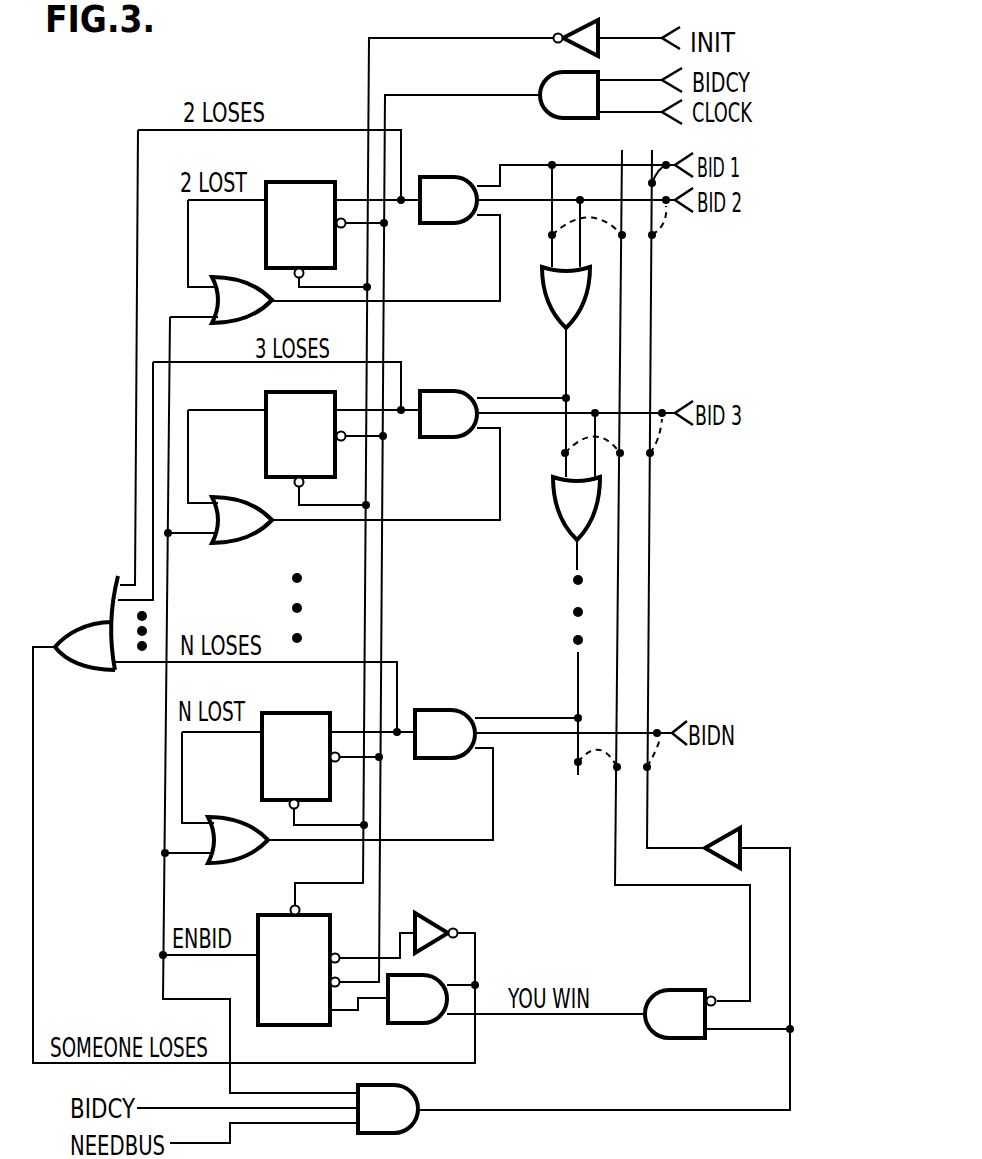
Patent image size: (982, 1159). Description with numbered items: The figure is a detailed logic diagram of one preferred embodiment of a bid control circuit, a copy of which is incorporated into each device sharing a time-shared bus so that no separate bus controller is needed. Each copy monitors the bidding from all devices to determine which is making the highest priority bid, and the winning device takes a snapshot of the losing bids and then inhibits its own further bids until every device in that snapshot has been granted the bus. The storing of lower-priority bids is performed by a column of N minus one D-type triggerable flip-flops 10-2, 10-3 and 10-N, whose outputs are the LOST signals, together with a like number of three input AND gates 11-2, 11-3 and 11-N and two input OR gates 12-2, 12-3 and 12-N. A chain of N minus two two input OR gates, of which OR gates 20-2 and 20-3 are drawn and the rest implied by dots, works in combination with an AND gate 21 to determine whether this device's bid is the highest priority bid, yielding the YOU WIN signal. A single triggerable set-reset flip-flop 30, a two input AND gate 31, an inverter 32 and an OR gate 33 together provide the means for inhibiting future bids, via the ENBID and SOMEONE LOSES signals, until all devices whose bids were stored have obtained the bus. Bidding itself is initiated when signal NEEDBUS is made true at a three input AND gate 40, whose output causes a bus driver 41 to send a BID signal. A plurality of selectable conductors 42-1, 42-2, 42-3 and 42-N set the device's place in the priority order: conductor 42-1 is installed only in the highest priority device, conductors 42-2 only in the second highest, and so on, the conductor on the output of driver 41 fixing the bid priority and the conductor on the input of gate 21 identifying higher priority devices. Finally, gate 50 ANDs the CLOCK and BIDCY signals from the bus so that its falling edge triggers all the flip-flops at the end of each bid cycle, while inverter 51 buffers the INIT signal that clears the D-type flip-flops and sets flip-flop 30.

The D-type triggerable flip-flop 10-2 is at (270, 181).
The D-type triggerable flip-flop 10-3 is at (266, 394).
The D-type triggerable flip-flop 10-N is at (322, 688).
The three input AND gate 11-2 is at (455, 177).
The three input AND gate 11-3 is at (450, 392).
The three input AND gate 11-N is at (455, 712).
The two input OR gate 12-2 is at (245, 282).
The two input OR gate 12-3 is at (250, 540).
The two input OR gate 12-N is at (240, 820).
The two input OR gate 20-2 is at (551, 308).
The two input OR gate 20-3 is at (560, 512).
The AND gate 21 is at (655, 1030).
The triggerable set-reset flip-flop 30 is at (258, 972).
The two input AND gate 31 is at (405, 1022).
The inverter 32 is at (437, 922).
The OR gate 33 is at (88, 672).
The three input AND gate 40 is at (415, 1124).
The bus driver 41 is at (745, 828).
The selectable conductor 42-1 is at (648, 180).
The selectable conductor 42-2 is at (594, 220).
The selectable conductor 42-3 is at (600, 435).
The selectable conductor 42-N is at (598, 750).
The AND gate 50 is at (549, 105).
The inverter 51 is at (560, 42).